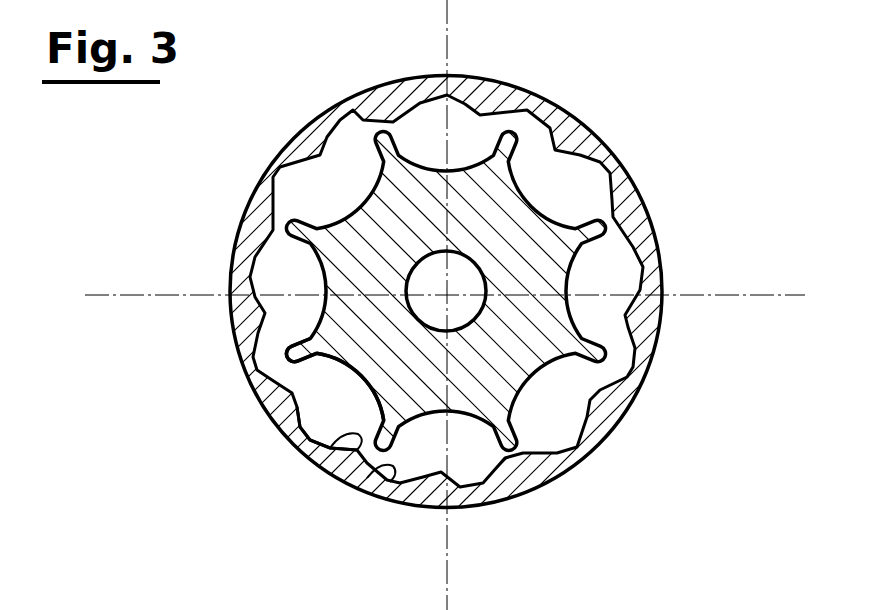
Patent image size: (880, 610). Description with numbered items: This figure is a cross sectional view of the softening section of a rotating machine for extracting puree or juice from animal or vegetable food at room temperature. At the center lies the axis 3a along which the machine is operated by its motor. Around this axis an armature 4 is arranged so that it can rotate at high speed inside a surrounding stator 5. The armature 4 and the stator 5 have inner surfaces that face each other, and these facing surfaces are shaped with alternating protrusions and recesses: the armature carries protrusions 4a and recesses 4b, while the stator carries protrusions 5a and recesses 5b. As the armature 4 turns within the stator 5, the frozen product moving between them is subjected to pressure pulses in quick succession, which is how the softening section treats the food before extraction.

The axis 3a is at (446, 290).
The armature 4 is at (352, 292).
The protrusions of the armature 4a is at (292, 363).
The recesses of the armature 4b is at (367, 370).
The stator 5 is at (243, 262).
The protrusions of the stator 5a is at (310, 448).
The recesses of the stator 5b is at (352, 482).